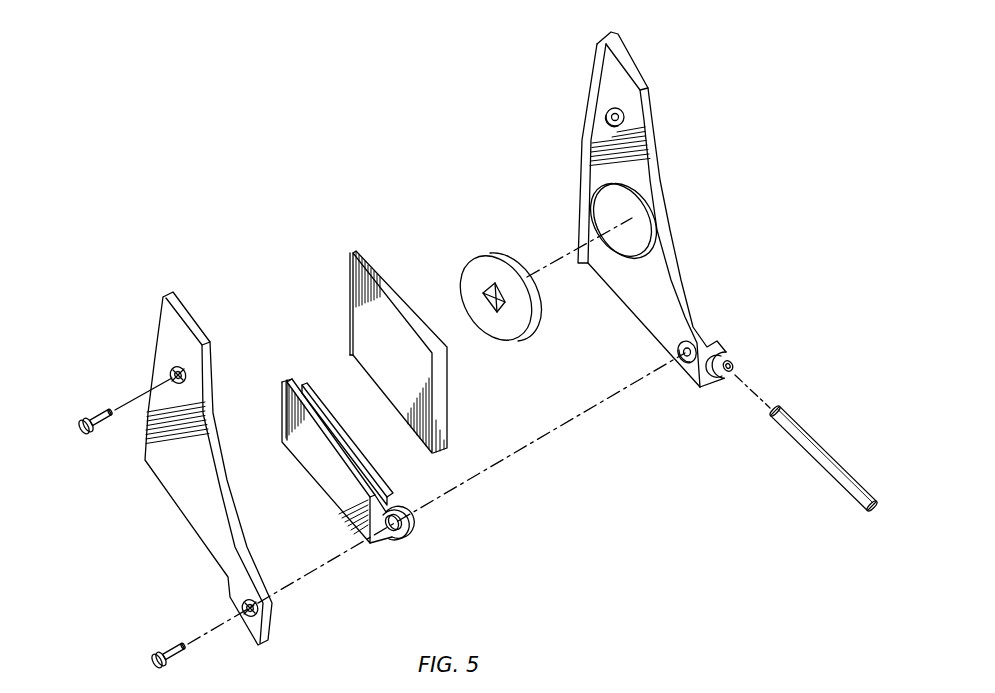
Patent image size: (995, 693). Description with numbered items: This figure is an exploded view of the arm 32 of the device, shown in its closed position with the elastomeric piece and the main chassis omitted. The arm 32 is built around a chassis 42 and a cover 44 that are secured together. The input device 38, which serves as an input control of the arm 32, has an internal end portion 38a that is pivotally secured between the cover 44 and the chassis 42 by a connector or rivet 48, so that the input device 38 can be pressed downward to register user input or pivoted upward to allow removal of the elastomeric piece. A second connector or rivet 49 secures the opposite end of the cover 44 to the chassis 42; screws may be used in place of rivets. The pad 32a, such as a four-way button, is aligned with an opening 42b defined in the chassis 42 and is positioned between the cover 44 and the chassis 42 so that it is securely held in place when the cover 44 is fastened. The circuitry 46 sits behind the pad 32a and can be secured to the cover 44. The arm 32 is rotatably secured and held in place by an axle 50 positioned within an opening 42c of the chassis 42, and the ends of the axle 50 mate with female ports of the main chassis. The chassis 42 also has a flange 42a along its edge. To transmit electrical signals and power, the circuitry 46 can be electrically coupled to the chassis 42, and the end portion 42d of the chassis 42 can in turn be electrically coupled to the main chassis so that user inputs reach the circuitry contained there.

The arm 32 is at (302, 136).
The pad 32a is at (472, 247).
The input device 38 is at (313, 490).
The internal end portion 38a is at (400, 538).
The chassis 42 is at (675, 224).
The flange 42a is at (580, 153).
The opening 42b is at (631, 241).
The opening 42c is at (733, 366).
The end portion 42d is at (723, 348).
The cover 44 is at (149, 340).
The circuitry 46 is at (373, 347).
The connector or rivet 48 is at (167, 650).
The connector or rivet 49 is at (96, 412).
The axle 50 is at (837, 463).